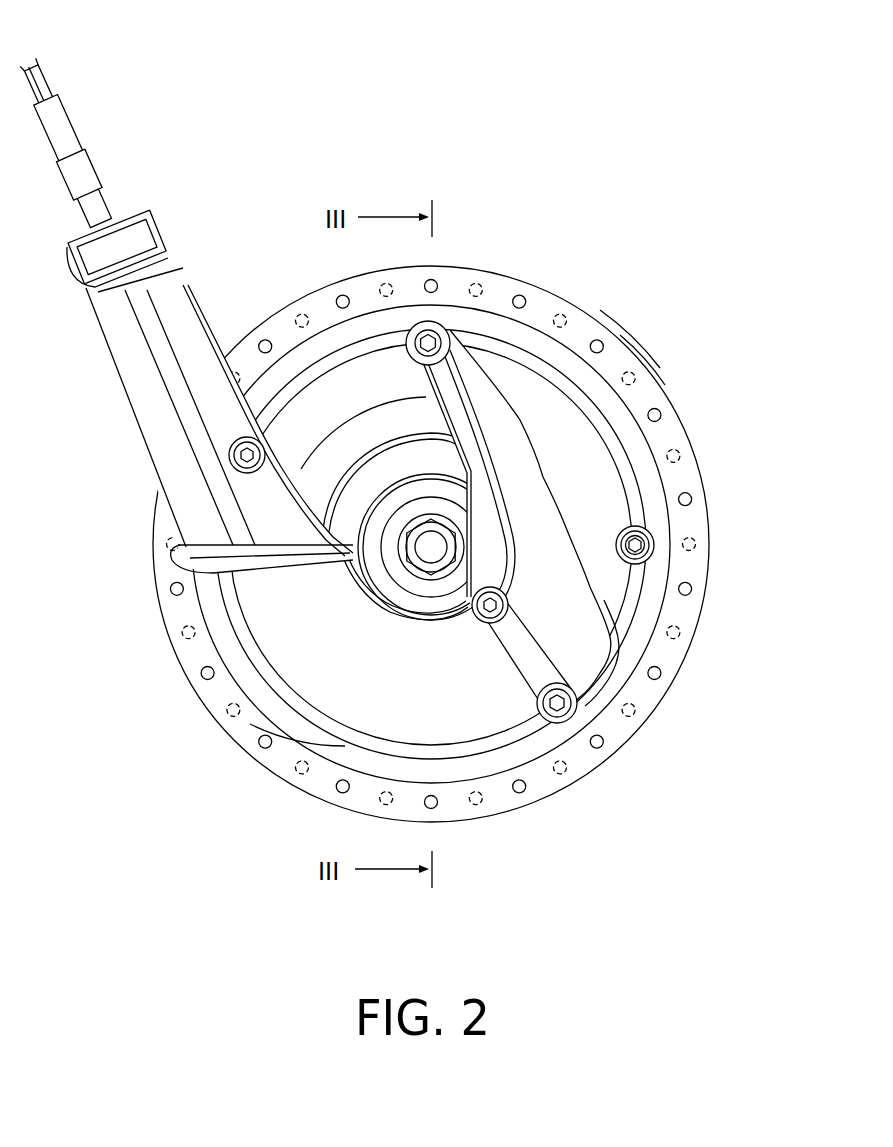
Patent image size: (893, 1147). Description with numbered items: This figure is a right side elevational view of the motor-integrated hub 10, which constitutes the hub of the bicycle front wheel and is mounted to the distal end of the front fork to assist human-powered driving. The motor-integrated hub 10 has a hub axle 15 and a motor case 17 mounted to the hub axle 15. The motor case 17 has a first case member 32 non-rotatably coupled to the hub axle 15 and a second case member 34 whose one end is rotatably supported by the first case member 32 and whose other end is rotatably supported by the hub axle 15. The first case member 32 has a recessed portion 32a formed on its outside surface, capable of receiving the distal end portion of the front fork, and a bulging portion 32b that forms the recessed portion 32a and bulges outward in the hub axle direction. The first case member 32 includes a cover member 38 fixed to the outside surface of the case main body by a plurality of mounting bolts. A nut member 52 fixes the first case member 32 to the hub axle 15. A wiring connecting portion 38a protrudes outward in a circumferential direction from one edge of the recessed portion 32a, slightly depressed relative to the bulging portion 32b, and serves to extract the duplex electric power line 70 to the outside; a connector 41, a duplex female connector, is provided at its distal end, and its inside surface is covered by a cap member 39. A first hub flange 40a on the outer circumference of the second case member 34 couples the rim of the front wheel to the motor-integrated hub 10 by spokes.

The motor-integrated hub 10 is at (585, 239).
The hub axle 15 is at (332, 678).
The motor case 17 is at (626, 302).
The first case member 32 is at (629, 691).
The recessed portion 32a is at (392, 402).
The bulging portion 32b is at (332, 678).
The second case member 34 is at (666, 378).
The cover member 38 is at (601, 465).
The wiring connecting portion 38a is at (170, 257).
The cap member 39 is at (256, 464).
The first hub flange 40a is at (645, 361).
The connector 41 is at (110, 213).
The nut member 52 is at (426, 548).
The electric power line 70 is at (57, 115).